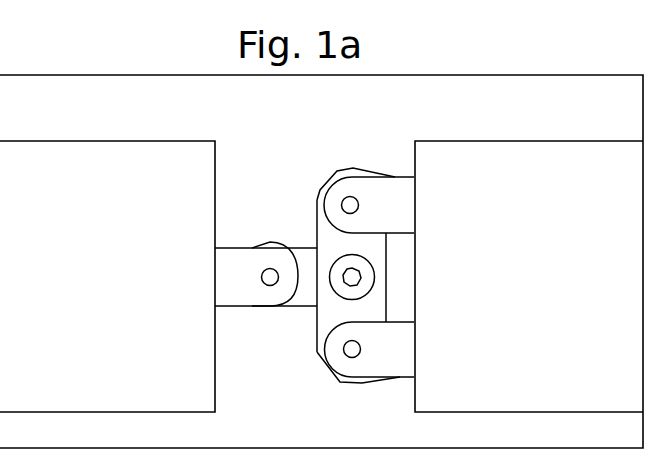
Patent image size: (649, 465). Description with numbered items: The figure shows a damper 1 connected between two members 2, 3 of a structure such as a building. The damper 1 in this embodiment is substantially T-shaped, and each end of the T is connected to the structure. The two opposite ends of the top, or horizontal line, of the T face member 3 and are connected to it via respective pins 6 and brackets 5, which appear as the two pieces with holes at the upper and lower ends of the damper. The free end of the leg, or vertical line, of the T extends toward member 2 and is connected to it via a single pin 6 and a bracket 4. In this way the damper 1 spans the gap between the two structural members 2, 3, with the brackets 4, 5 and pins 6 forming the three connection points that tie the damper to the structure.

The damper 1 is at (285, 206).
The member 2 is at (135, 290).
The member 3 is at (525, 283).
The bracket 4 is at (245, 265).
The brackets 5 is at (393, 202).
The pins 6 is at (346, 200).